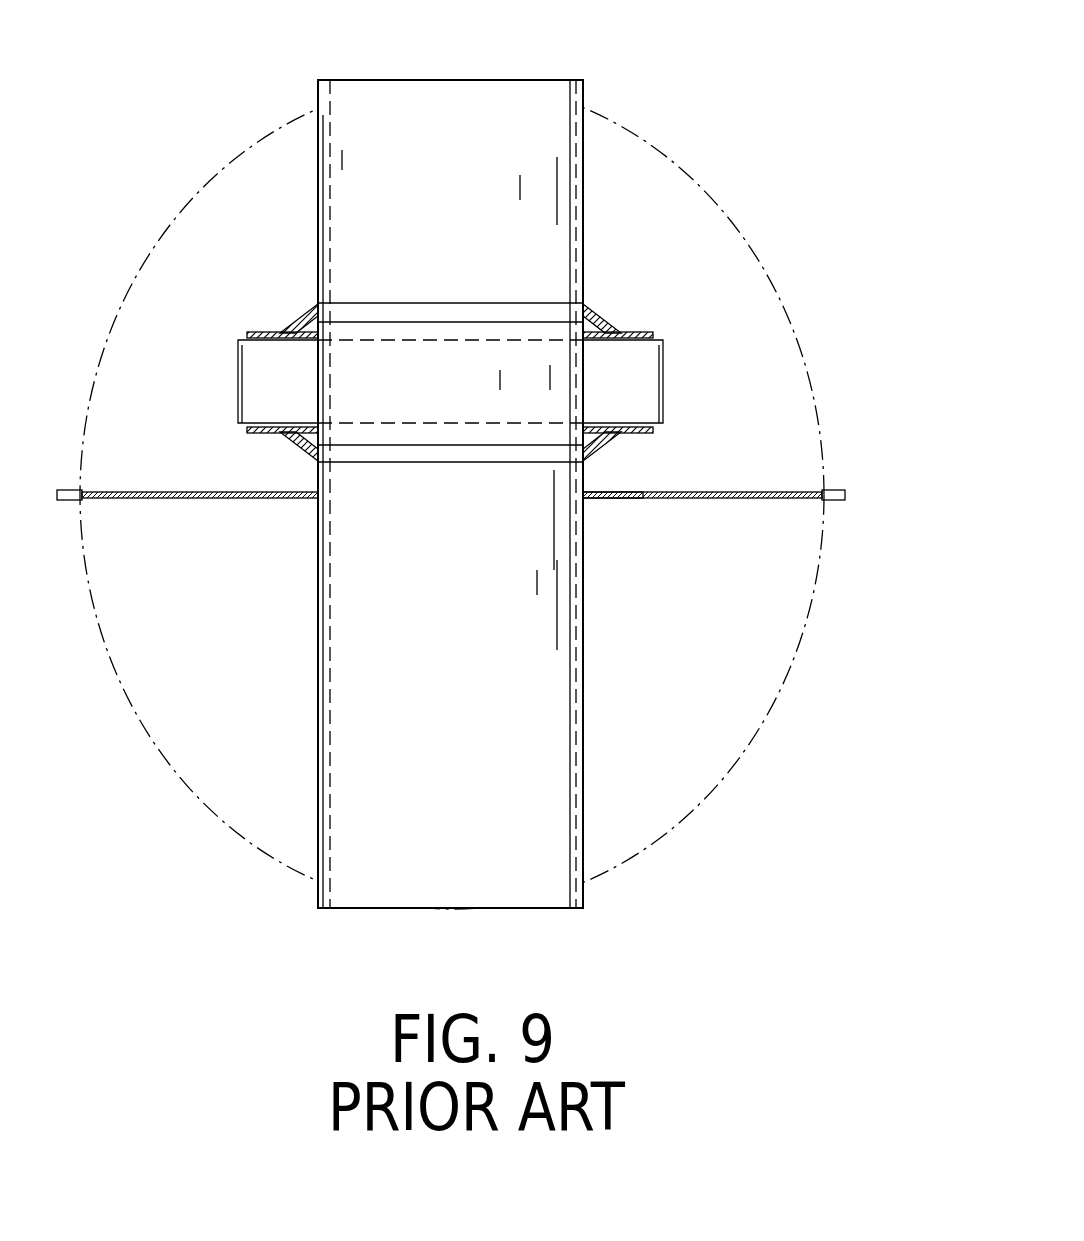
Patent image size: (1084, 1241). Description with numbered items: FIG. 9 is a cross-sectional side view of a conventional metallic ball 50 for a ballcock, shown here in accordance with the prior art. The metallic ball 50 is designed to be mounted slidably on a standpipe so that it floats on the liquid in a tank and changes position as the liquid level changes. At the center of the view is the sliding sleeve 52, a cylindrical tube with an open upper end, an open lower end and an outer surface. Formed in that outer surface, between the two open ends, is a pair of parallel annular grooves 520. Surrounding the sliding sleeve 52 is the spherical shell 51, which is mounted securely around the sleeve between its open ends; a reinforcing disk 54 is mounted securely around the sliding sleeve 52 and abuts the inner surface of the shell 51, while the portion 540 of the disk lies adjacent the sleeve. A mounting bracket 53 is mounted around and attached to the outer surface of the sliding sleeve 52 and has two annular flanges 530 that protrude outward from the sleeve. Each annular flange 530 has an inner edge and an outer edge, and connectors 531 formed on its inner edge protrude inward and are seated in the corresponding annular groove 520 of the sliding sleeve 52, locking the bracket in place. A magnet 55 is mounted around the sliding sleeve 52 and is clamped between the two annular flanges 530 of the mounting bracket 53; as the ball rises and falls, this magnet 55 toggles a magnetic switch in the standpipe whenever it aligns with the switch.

The metallic ball 50 is at (648, 93).
The shell 51 is at (712, 205).
The sliding sleeve 52 is at (585, 197).
The mounting bracket 53 is at (680, 310).
The annular grooves 520 is at (485, 310).
The annular flanges 530 is at (283, 330).
The connectors 531 is at (587, 310).
The reinforcing disk 54 is at (715, 492).
The plate opening portion 540 is at (585, 496).
The magnet 55 is at (270, 390).